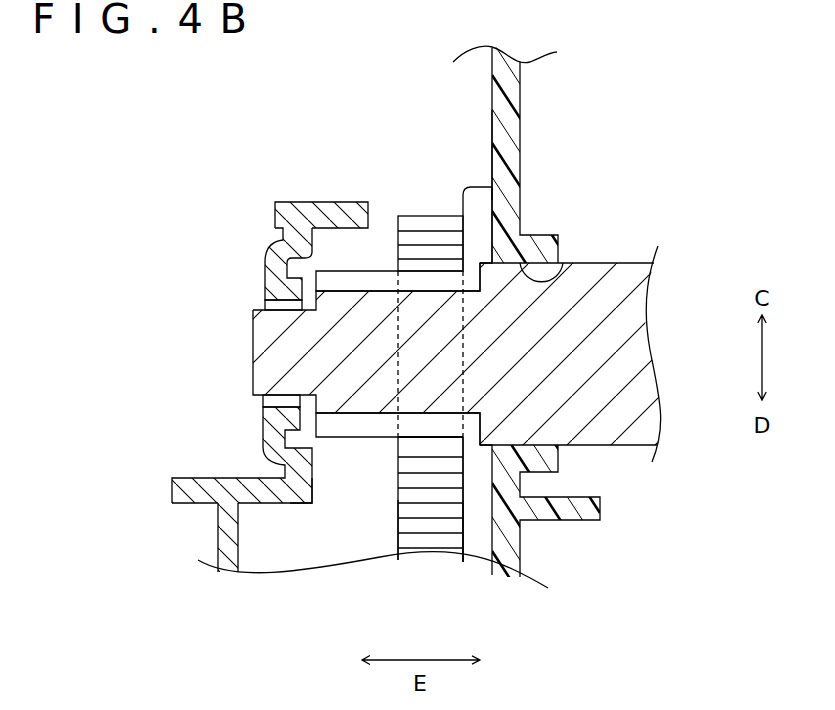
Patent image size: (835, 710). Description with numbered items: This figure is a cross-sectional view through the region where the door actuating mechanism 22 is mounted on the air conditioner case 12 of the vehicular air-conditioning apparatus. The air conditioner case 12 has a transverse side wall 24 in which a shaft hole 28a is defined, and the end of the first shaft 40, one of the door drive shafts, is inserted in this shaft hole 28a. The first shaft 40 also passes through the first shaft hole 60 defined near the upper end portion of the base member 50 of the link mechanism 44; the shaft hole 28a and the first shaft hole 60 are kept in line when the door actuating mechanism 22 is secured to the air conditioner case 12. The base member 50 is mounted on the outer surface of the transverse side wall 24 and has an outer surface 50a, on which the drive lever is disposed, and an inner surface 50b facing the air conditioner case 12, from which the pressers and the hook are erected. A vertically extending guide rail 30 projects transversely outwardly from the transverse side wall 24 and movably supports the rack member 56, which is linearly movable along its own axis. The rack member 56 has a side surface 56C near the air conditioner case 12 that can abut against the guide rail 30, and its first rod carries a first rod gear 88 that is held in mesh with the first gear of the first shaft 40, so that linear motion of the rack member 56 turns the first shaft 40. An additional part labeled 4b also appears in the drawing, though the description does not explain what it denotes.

The air conditioner case 12 is at (536, 103).
The door actuating mechanism 22 is at (299, 183).
The transverse side wall 24 is at (488, 135).
The shaft hole 28a is at (553, 277).
The guide rail 30 is at (477, 200).
The first shaft 40 is at (626, 254).
The link mechanism 44 is at (255, 244).
The rotor 4b is at (350, 425).
The base member 50 is at (195, 469).
The outer surface 50a is at (218, 540).
The inner surface 50b is at (312, 492).
The rack member 56 is at (414, 203).
The side surface 56C is at (467, 517).
The first shaft hole 60 is at (277, 398).
The first rod gear 88 is at (432, 548).